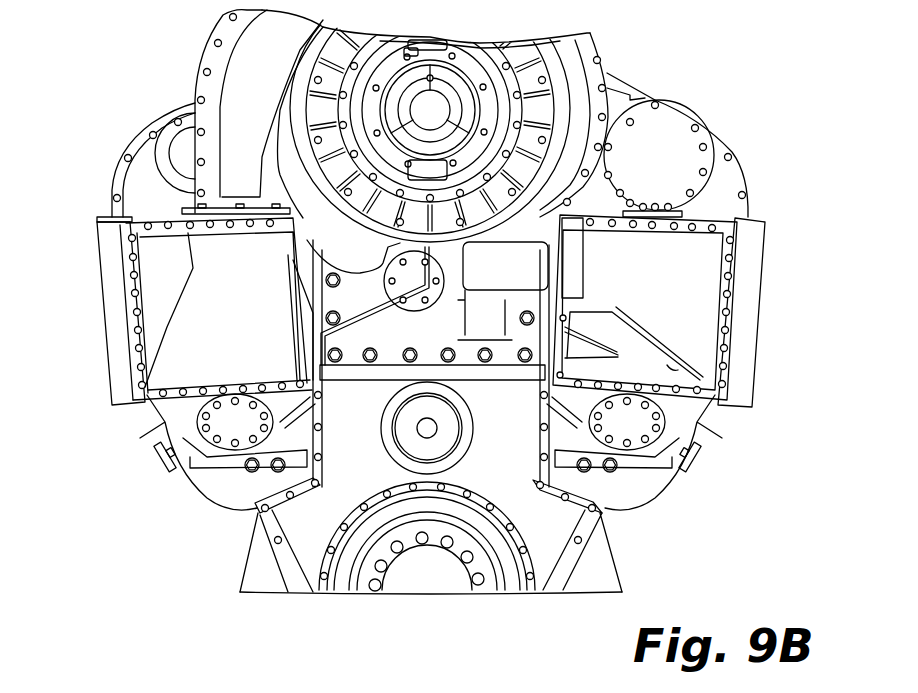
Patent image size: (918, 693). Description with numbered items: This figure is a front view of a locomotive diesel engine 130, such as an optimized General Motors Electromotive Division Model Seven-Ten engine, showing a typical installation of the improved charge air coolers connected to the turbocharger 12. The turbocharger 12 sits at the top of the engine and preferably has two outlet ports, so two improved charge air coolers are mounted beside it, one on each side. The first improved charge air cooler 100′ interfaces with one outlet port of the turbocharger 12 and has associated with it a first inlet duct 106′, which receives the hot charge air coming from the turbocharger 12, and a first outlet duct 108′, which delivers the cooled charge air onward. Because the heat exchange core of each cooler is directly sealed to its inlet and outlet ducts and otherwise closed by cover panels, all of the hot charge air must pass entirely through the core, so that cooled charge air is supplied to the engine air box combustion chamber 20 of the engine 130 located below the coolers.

The turbocharger 12 is at (612, 62).
The locomotive diesel engine 130 is at (688, 100).
The first improved charge air cooler 100′ is at (767, 312).
The first inlet duct 106′ is at (683, 370).
The first outlet duct 108′ is at (677, 428).
The engine air box combustion chamber 20 is at (222, 510).